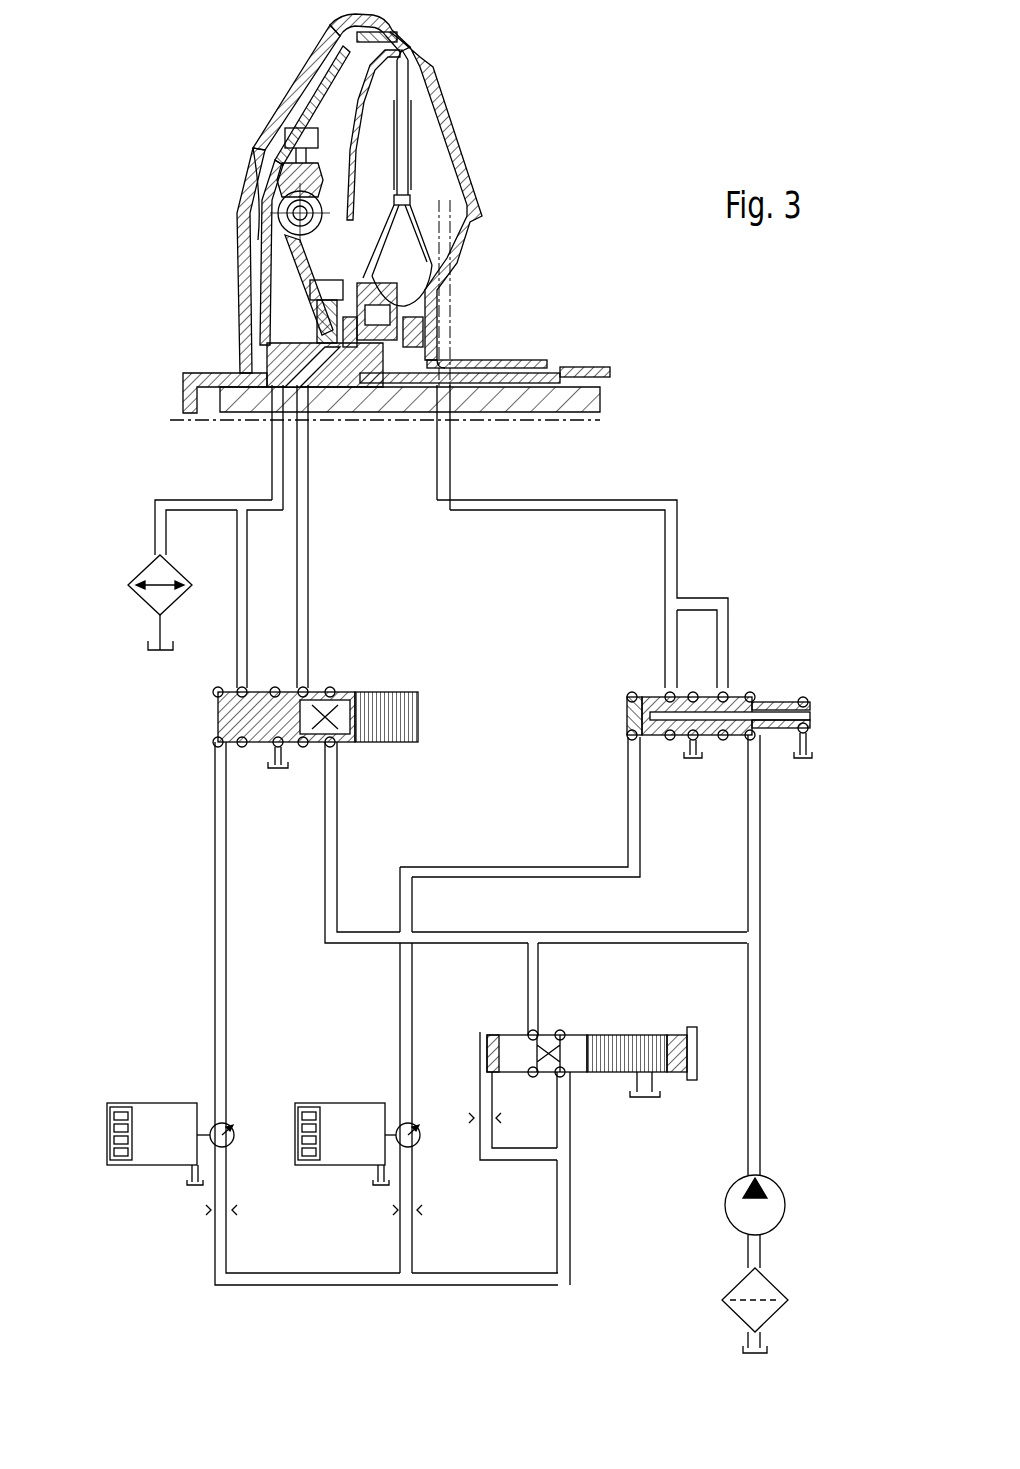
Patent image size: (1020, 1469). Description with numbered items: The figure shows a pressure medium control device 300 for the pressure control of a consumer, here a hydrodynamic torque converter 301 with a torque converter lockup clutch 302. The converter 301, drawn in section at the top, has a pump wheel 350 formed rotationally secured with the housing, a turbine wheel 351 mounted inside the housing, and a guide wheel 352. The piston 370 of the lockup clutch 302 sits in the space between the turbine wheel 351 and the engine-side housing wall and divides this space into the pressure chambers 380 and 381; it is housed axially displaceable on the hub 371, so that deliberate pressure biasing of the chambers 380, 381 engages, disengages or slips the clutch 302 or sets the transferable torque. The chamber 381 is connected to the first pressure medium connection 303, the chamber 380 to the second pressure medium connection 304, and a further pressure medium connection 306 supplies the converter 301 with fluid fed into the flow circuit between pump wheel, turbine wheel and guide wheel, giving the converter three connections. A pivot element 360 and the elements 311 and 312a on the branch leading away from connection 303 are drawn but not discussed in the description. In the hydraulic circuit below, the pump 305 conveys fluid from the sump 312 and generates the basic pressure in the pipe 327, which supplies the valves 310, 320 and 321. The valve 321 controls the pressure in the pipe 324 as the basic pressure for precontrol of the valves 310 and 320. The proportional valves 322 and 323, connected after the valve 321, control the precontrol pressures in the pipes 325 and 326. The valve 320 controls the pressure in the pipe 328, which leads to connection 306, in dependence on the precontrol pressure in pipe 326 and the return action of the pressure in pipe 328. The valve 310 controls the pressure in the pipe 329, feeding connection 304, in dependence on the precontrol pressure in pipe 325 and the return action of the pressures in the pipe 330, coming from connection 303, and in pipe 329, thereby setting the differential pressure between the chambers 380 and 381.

The pressure medium control device 300 is at (561, 114).
The hydrodynamic torque converter 301 is at (463, 58).
The torque converter lockup clutch 302 is at (289, 74).
The first pressure medium connection 303 is at (273, 443).
The second pressure medium connection 304 is at (308, 448).
The pump 305 is at (785, 1208).
The pressure medium connection 306 is at (452, 440).
The valve 310 is at (410, 663).
The vent filter 311 is at (140, 596).
The sump 312 is at (770, 1351).
The reservoir 312a is at (150, 649).
The valve 320 is at (778, 663).
The valve 321 is at (661, 1013).
The proportional valve 322 is at (148, 1160).
The proportional valve 323 is at (338, 1160).
The pipe 324 is at (570, 1208).
The pipe 325 is at (216, 990).
The pipe 326 is at (500, 870).
The pipe 327 is at (760, 998).
The pipe 328 is at (680, 525).
The pipe 329 is at (310, 602).
The pipe 330 is at (200, 505).
The pump wheel 350 is at (449, 184).
The turbine wheel 351 is at (389, 164).
The guide wheel 352 is at (419, 256).
The pivot pin 360 is at (275, 220).
The piston 370 is at (248, 197).
The hub 371 is at (270, 375).
The pressure chamber 380 is at (325, 100).
The pressure chamber 381 is at (270, 267).